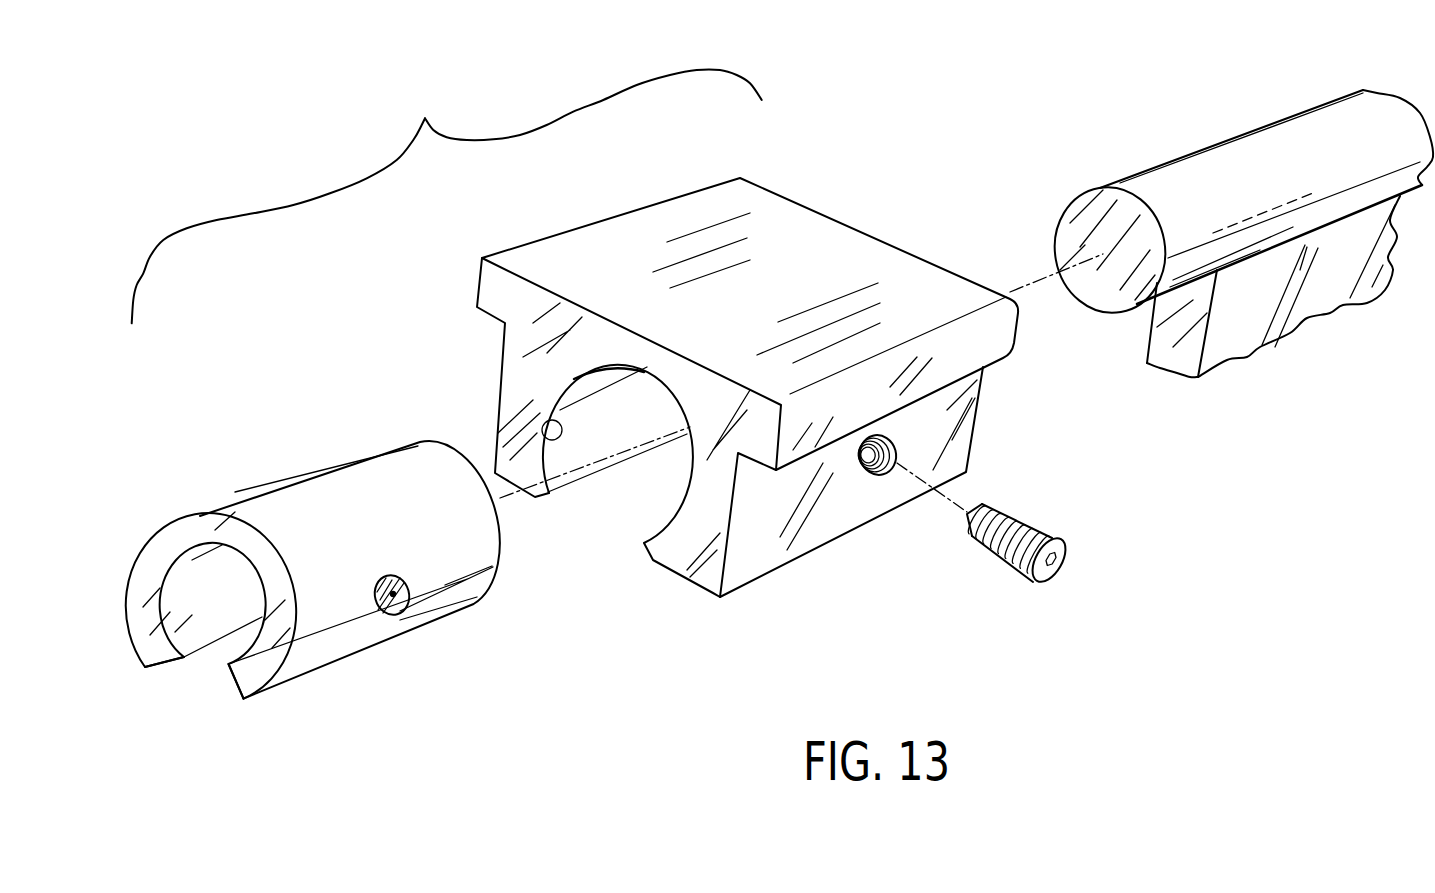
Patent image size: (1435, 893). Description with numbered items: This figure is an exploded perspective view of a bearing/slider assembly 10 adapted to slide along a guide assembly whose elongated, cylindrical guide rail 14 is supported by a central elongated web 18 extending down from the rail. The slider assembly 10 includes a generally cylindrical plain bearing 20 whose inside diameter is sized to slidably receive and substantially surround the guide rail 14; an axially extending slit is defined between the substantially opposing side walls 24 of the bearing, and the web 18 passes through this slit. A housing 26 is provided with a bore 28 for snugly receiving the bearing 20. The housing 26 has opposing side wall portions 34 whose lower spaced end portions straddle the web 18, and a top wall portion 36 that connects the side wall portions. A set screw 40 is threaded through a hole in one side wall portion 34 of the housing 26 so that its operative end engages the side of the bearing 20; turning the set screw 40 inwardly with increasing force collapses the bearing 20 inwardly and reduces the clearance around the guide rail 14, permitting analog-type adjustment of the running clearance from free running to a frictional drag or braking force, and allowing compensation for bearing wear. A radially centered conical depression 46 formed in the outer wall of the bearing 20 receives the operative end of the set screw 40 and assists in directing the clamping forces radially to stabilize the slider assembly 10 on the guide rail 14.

The bearing/slider assembly 10 is at (447, 192).
The guide rail 14 is at (1071, 204).
The web 18 is at (1287, 333).
The plain bearing 20 is at (297, 653).
The side walls 24 is at (183, 658).
The housing 26 is at (551, 231).
The bore 28 is at (542, 434).
The side wall portions 34 is at (837, 513).
The top wall portion 36 is at (621, 284).
The set screw 40 is at (1065, 550).
The conical depression 46 is at (393, 595).